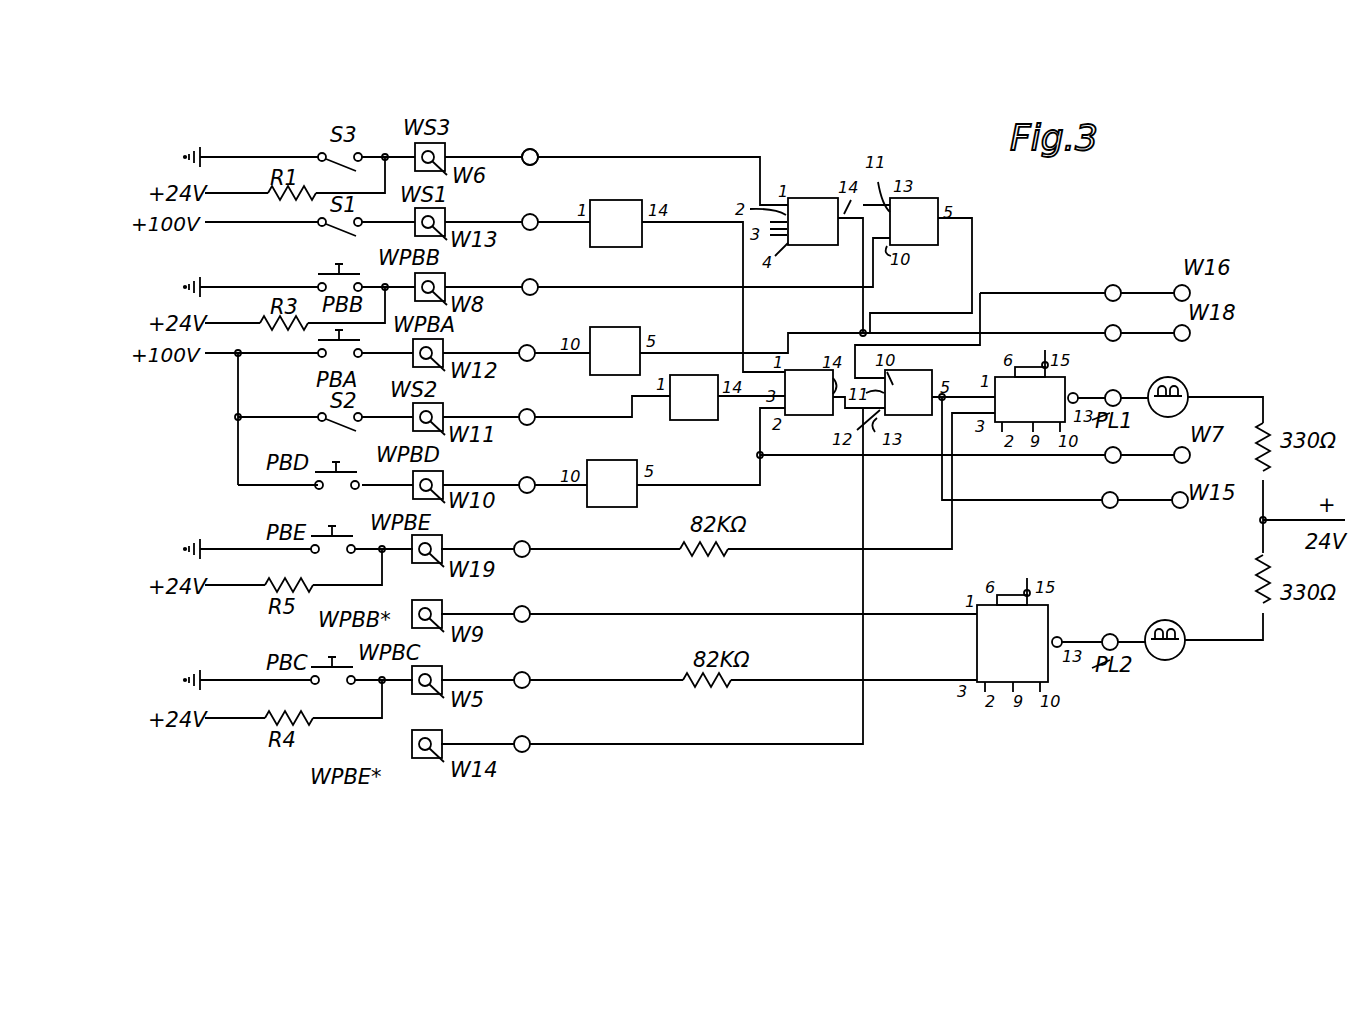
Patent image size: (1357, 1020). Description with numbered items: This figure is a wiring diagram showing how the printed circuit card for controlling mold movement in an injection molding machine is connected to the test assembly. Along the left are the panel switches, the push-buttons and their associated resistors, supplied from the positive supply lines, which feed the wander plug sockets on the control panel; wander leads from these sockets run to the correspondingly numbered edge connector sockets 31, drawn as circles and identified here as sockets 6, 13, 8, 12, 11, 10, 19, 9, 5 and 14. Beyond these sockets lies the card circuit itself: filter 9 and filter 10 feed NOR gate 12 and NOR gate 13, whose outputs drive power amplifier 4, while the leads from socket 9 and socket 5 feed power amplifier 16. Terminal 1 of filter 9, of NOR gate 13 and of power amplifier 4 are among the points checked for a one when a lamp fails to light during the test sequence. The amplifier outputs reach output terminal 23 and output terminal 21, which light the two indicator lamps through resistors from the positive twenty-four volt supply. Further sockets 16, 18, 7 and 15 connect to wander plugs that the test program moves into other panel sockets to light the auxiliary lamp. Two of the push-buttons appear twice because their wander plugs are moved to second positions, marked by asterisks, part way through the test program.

The edge connector socket 6 is at (533, 149).
The edge connector sockets 31 is at (540, 152).
The NOR gate 13 is at (533, 214).
The edge connector socket 8 is at (533, 279).
The filter 9 is at (525, 606).
The NOR gate 12 is at (530, 345).
The edge connector socket 11 is at (530, 409).
The filter 10 is at (530, 477).
The edge connector socket 19 is at (529, 533).
The edge connector socket 5 is at (525, 672).
The edge connector socket 14 is at (525, 736).
The power amplifier 16 is at (1147, 277).
The edge connector socket 18 is at (1147, 321).
The power amplifier 4 is at (1036, 391).
The output terminal 23 is at (1113, 386).
The edge connector socket 7 is at (1124, 440).
The edge connector socket 15 is at (1145, 489).
The output terminal 21 is at (1111, 630).
The component terminal 1 is at (1019, 635).